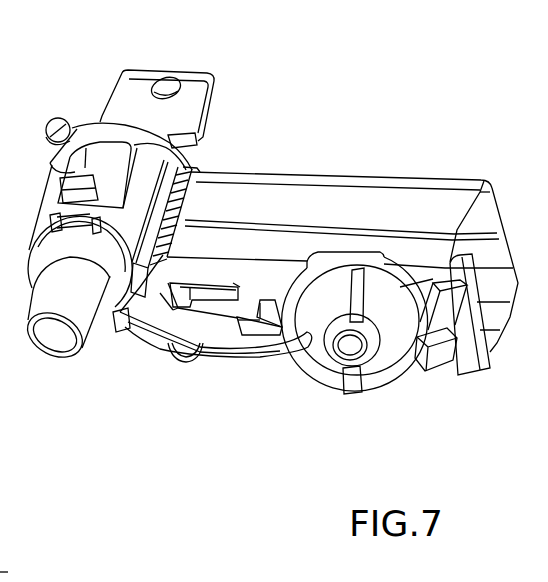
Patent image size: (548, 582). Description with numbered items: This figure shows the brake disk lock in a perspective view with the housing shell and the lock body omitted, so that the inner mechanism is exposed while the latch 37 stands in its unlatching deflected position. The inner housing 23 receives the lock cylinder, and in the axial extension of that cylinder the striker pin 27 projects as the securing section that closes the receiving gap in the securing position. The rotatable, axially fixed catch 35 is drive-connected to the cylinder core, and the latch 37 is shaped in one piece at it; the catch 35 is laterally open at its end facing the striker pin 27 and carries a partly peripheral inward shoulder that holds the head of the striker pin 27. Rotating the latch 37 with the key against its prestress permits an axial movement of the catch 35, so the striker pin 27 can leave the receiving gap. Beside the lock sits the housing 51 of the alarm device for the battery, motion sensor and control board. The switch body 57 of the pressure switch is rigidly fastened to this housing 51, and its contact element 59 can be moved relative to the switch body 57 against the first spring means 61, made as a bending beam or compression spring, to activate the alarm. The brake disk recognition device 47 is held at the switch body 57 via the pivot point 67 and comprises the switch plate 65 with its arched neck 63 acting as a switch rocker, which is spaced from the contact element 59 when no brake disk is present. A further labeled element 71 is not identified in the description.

The inner housing 23 is at (45, 205).
The striker pin 27 is at (104, 322).
The catch 35 is at (146, 190).
The latch 37 is at (86, 158).
The brake disk recognition device 47 is at (163, 363).
The housing 51 is at (399, 178).
The switch body 57 is at (135, 343).
The contact element 59 is at (221, 306).
The first spring means 61 is at (246, 338).
The arched neck 63 is at (200, 323).
The switch plate 65 is at (173, 304).
The pivot point 67 is at (258, 342).
The reference 71 is at (21, 566).